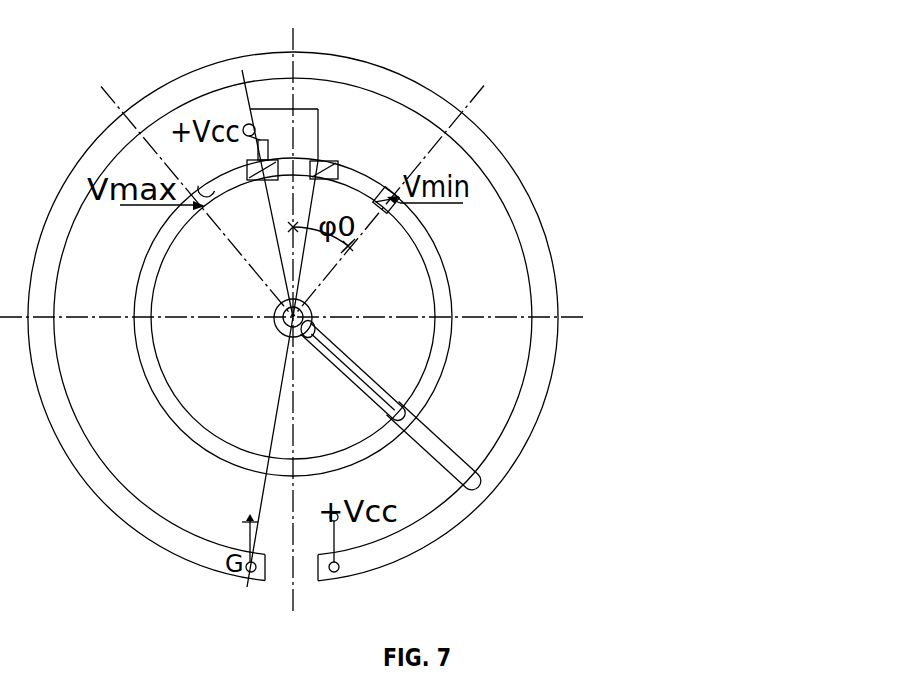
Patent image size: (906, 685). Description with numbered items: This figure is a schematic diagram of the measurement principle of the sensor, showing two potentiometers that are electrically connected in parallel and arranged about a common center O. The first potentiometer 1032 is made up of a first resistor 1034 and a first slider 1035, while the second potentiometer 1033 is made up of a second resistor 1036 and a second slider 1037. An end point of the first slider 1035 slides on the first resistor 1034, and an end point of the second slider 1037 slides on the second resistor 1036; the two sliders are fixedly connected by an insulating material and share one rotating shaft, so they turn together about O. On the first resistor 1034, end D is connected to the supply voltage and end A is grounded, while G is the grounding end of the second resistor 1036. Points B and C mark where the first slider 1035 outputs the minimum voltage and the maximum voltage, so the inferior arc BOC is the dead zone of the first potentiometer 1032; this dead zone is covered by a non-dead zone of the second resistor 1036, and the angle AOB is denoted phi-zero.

The first potentiometer 1032 is at (424, 304).
The second resistor 1036 is at (478, 141).
The first resistor 1034 is at (434, 251).
The second potentiometer 1033 is at (561, 340).
The first slider 1035 is at (372, 371).
The second slider 1037 is at (452, 445).